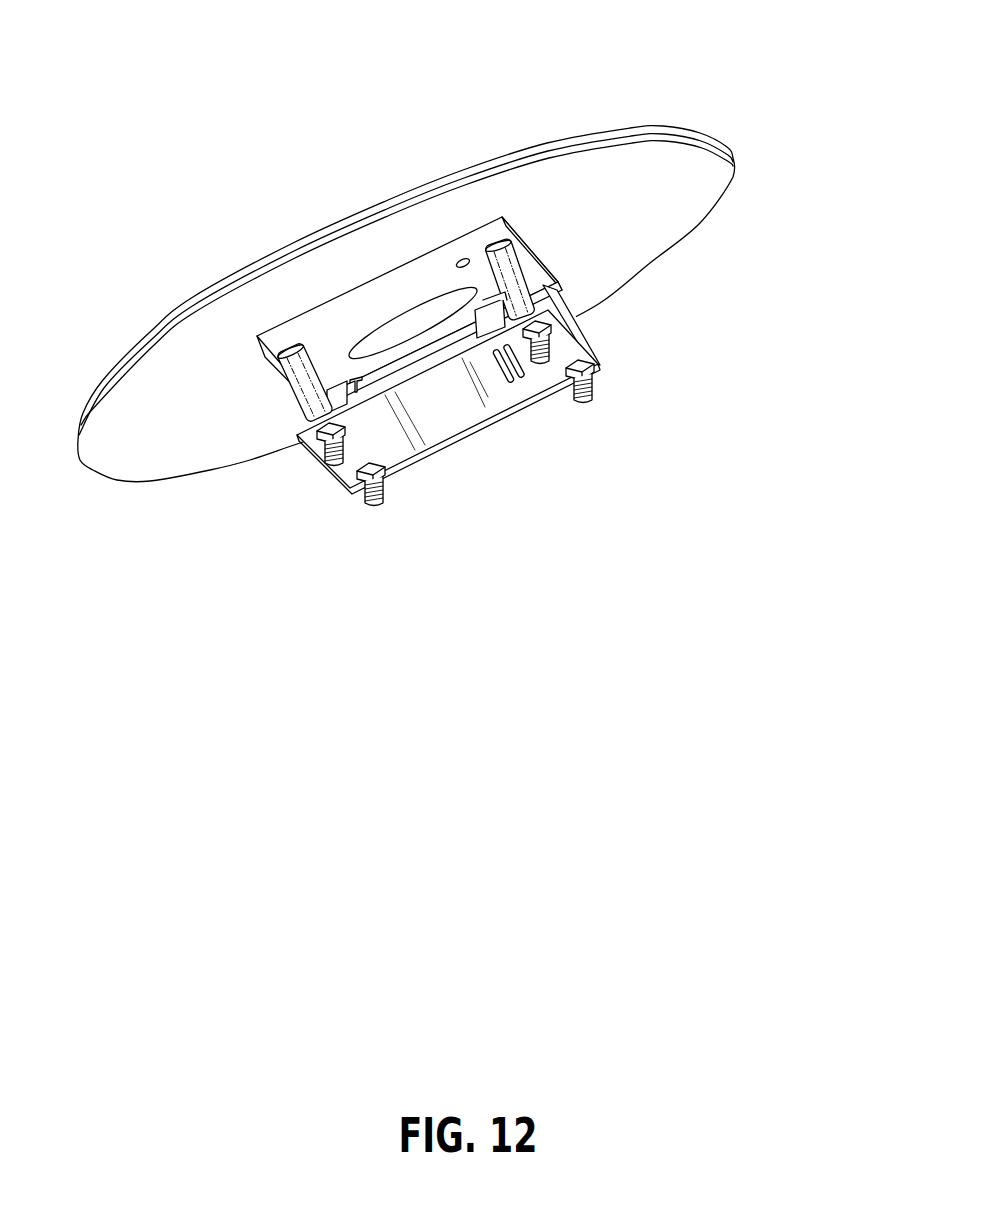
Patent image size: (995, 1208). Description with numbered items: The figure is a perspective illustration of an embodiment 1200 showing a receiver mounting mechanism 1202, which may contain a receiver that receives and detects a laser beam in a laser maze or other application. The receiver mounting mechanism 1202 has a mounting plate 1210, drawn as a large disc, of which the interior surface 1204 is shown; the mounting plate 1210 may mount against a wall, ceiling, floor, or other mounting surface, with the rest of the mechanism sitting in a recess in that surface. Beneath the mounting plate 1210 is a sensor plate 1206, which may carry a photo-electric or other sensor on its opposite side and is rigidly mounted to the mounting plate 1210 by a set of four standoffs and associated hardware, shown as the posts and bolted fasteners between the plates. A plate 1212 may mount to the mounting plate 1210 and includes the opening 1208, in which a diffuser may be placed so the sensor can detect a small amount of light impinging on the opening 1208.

The embodiment 1200 is at (458, 606).
The receiver mounting mechanism 1202 is at (521, 153).
The interior surface 1204 is at (302, 392).
The sensor plate 1206 is at (477, 419).
The opening 1208 is at (392, 302).
The mounting plate 1210 is at (733, 158).
The plate 1212 is at (285, 336).